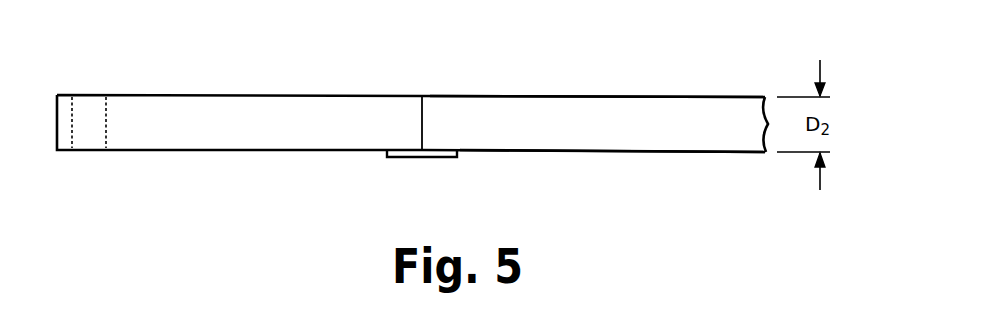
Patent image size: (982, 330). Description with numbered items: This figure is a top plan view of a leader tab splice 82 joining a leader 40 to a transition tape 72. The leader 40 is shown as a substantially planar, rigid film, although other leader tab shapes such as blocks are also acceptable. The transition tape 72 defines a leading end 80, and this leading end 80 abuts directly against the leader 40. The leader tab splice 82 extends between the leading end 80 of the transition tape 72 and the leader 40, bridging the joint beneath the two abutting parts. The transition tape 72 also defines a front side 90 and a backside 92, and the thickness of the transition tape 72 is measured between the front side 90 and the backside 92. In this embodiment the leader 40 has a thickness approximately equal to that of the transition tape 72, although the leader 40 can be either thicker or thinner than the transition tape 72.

The leader 40 is at (211, 140).
The transition tape 72 is at (609, 140).
The leading end 80 is at (422, 106).
The leader tab splice 82 is at (445, 158).
The front side 90 is at (678, 96).
The backside 92 is at (725, 153).